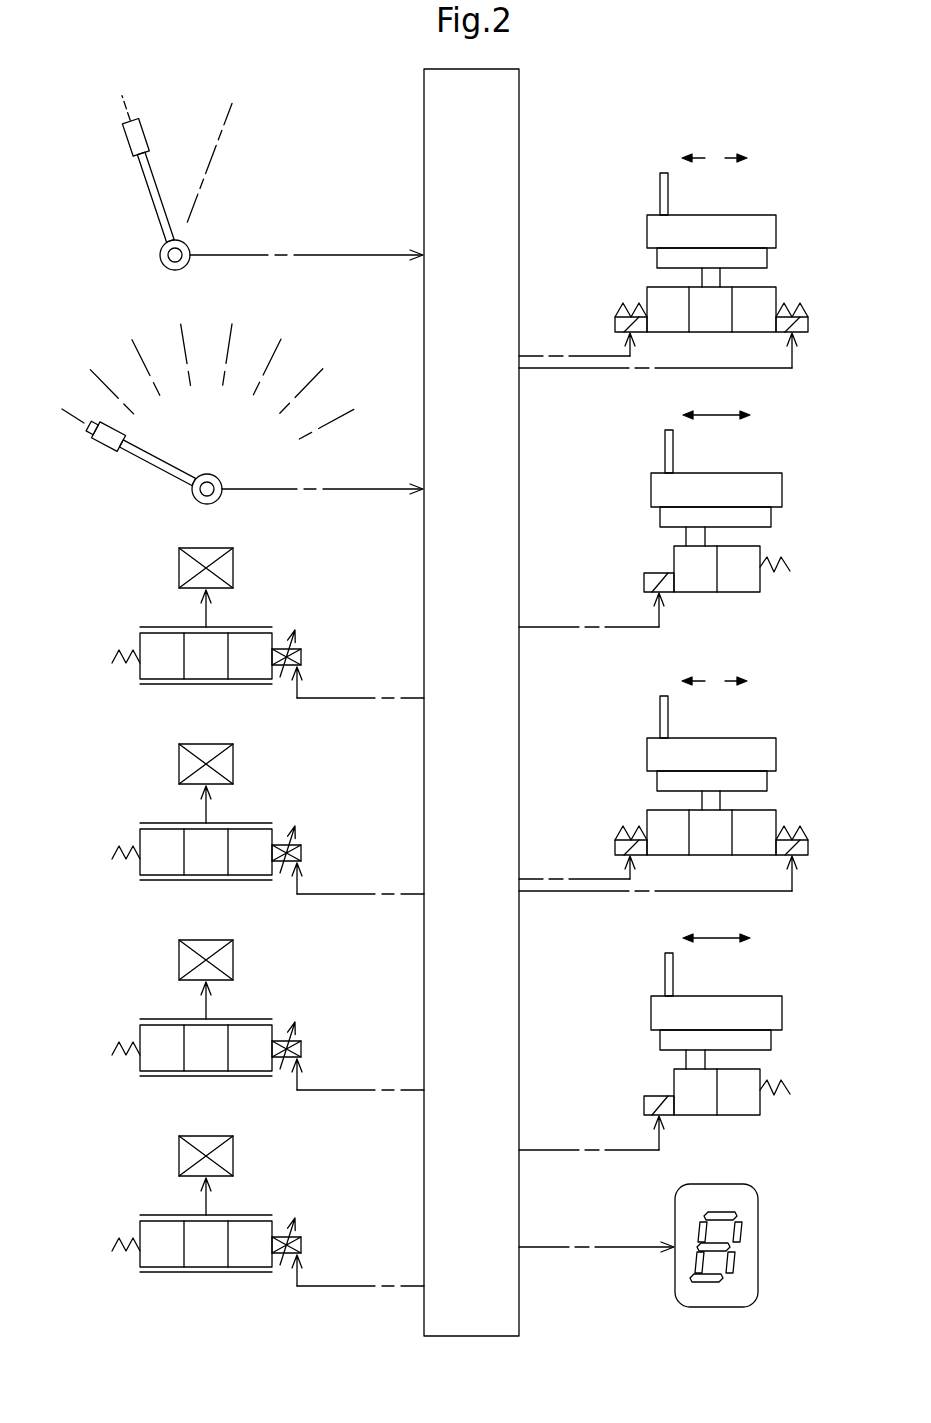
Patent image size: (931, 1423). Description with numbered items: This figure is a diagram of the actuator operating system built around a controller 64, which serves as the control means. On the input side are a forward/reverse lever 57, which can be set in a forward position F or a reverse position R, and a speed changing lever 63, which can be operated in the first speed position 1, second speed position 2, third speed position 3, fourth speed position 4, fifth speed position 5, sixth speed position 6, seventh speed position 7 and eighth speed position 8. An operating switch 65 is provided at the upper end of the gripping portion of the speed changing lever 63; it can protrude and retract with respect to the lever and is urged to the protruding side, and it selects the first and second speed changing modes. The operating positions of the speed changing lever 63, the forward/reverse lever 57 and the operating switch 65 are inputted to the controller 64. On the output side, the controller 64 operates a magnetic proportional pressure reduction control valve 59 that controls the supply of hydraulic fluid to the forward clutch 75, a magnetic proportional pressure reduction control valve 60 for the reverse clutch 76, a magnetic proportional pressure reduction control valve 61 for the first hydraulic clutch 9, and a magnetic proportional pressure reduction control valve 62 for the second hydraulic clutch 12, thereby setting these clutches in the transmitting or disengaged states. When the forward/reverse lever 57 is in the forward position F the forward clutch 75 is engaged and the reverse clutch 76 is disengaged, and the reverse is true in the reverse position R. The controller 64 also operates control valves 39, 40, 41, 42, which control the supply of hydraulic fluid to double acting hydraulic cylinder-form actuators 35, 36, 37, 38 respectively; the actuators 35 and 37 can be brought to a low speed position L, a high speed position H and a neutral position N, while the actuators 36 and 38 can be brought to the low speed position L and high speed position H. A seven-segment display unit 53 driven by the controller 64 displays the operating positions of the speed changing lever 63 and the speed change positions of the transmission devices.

The controller 64 is at (424, 130).
The forward/reverse lever 57 is at (148, 185).
The speed changing lever 63 is at (110, 441).
The operating switch 65 is at (87, 431).
The first speed position 1 is at (61, 407).
The second speed position 2 is at (103, 380).
The third speed position 3 is at (139, 354).
The fourth speed position 4 is at (181, 341).
The fifth speed position 5 is at (232, 341).
The sixth speed position 6 is at (273, 354).
The seventh speed position 7 is at (310, 380).
The eighth speed position 8 is at (336, 415).
The forward clutch 75 is at (233, 572).
The reverse clutch 76 is at (239, 783).
The first hydraulic clutch 9 is at (233, 979).
The second hydraulic clutch 12 is at (239, 1175).
The magnetic proportional pressure reduction control valve 59 is at (139, 666).
The magnetic proportional pressure reduction control valve 60 is at (249, 865).
The magnetic proportional pressure reduction control valve 61 is at (249, 1061).
The magnetic proportional pressure reduction control valve 62 is at (249, 1257).
The actuator 35 is at (745, 215).
The actuator 36 is at (763, 480).
The actuator 37 is at (730, 740).
The actuator 38 is at (741, 997).
The control valve 39 is at (770, 290).
The control valve 40 is at (750, 552).
The control valve 41 is at (677, 835).
The control valve 42 is at (679, 1102).
The seven-segment display unit 53 is at (758, 1245).